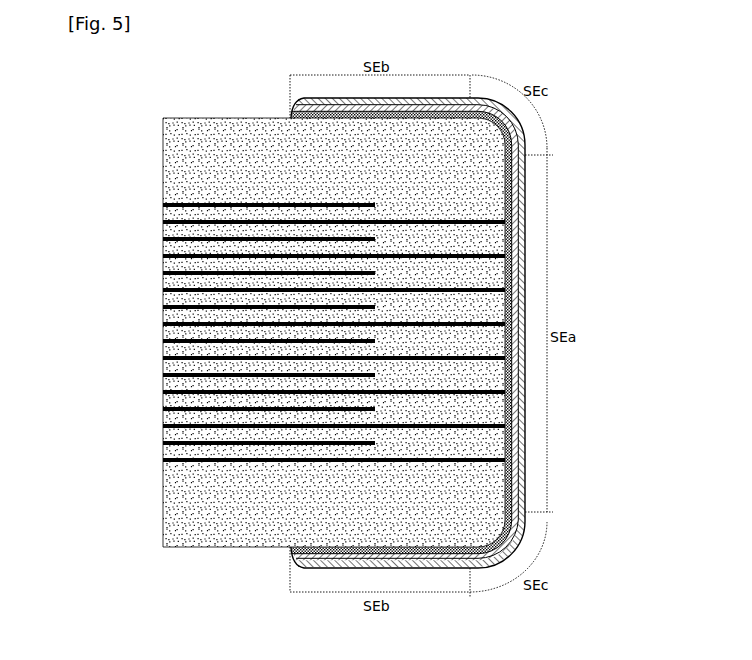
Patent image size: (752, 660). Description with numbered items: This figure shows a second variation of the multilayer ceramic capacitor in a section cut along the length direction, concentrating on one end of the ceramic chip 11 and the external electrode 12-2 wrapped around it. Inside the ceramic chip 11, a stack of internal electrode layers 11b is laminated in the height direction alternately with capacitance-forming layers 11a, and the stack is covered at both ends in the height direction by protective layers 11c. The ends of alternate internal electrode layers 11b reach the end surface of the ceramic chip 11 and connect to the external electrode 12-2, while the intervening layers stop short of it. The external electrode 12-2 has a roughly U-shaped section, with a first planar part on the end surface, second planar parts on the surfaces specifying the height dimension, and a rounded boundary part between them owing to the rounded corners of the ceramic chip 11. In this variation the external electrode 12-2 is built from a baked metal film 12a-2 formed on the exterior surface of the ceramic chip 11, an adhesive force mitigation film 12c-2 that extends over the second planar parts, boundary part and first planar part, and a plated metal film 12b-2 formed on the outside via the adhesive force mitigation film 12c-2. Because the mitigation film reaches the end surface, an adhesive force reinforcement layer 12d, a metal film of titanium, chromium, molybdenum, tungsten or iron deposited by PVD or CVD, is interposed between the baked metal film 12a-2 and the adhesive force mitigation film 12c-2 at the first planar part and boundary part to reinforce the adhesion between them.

The ceramic chip 11 is at (301, 303).
The capacitance-forming layers 11a is at (163, 247).
The internal electrode layers 11b is at (163, 207).
The protective layers 11c is at (163, 157).
The external electrode 12-2 is at (458, 333).
The baked metal film 12a-2 is at (522, 258).
The plated metal film 12b-2 is at (525, 220).
The adhesive force mitigation film 12c-2 is at (525, 182).
The adhesive force reinforcement layer 12d is at (525, 364).